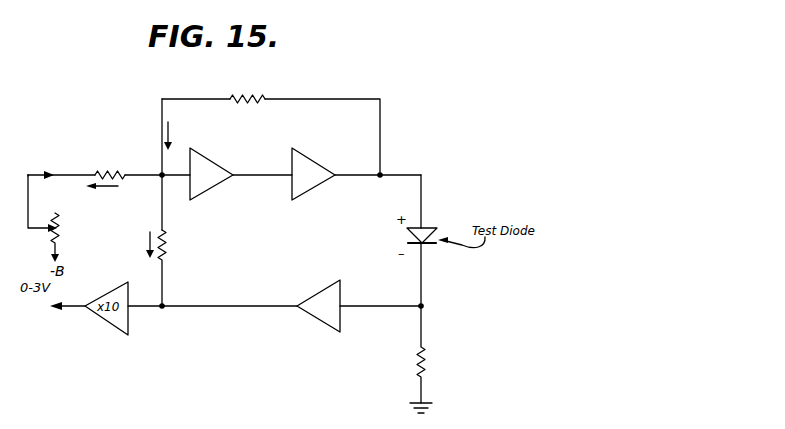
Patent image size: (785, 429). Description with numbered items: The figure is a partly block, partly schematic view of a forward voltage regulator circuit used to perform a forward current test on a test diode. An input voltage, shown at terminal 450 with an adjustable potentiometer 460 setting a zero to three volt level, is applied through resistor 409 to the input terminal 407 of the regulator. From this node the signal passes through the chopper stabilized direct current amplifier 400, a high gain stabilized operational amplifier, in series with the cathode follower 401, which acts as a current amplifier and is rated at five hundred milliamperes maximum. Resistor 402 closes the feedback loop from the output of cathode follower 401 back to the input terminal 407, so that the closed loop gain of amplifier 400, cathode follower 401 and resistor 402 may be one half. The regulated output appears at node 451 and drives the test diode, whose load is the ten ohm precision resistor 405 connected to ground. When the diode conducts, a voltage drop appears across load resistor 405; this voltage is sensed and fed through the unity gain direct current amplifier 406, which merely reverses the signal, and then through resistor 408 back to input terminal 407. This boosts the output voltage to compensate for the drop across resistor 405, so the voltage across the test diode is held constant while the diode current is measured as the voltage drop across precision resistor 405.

The chopper stabilized direct current amplifier 400 is at (212, 158).
The cathode follower 401 is at (322, 167).
The resistor 402 is at (262, 90).
The precision load resistor 405 is at (430, 368).
The unity gain direct current amplifier 406 is at (320, 321).
The input terminal 407 is at (163, 177).
The resistor 408 is at (166, 245).
The resistor 409 is at (105, 169).
The input terminal 450 is at (28, 172).
The output node 451 is at (421, 174).
The potentiometer 460 is at (60, 228).